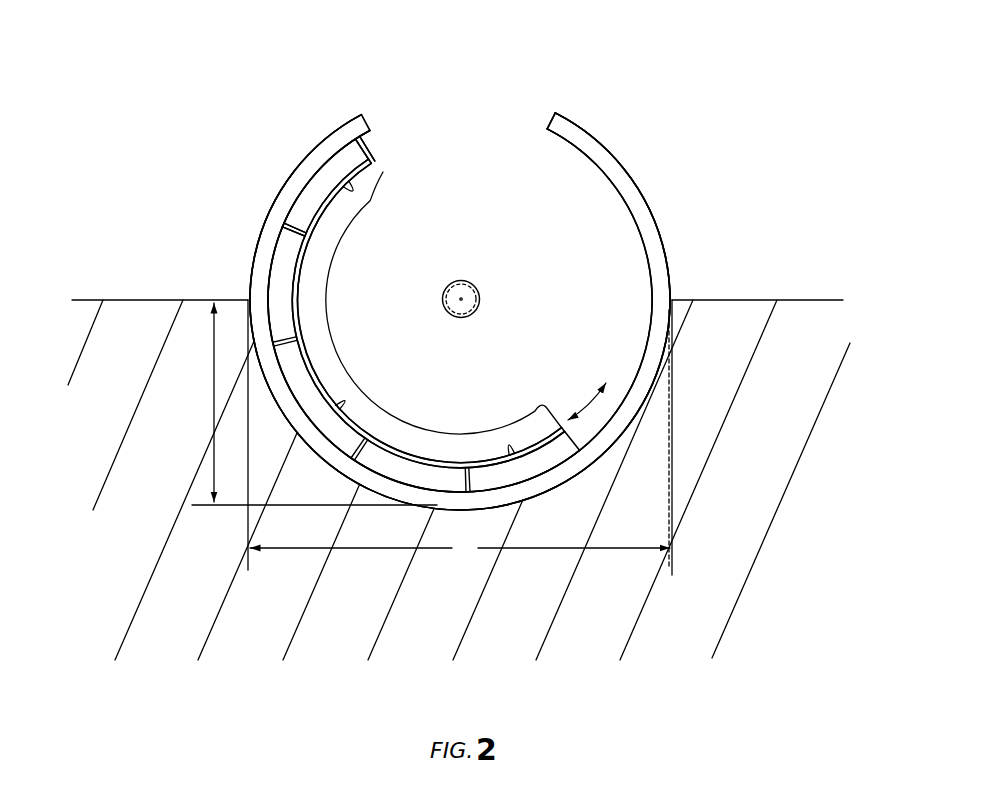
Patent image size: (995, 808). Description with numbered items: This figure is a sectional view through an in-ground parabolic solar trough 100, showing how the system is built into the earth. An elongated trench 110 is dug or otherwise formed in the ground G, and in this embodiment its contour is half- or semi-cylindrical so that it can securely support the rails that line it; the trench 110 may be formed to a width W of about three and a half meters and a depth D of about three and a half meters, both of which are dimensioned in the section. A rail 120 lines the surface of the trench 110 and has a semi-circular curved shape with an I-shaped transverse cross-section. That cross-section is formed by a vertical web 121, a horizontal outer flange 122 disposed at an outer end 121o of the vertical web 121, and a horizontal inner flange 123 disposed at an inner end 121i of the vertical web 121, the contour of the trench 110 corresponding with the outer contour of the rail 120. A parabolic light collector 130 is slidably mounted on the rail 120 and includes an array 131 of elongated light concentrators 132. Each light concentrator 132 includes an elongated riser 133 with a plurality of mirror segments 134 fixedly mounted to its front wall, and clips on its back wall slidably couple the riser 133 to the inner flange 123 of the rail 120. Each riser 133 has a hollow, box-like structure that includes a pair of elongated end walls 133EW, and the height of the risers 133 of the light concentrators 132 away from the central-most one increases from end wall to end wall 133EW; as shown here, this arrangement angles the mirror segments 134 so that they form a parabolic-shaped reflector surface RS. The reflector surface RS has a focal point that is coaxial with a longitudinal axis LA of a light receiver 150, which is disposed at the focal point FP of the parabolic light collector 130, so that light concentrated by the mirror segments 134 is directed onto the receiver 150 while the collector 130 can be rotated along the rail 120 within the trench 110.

The in-ground parabolic solar trough 100 is at (417, 55).
The trench 110 is at (667, 322).
The rail 120 is at (622, 165).
The vertical web 121 is at (568, 122).
The outer end of vertical web 121o is at (650, 198).
The inner end of vertical web 121i is at (646, 238).
The horizontal outer flange 122 is at (603, 141).
The horizontal inner flange 123 is at (603, 172).
The parabolic light collector 130 is at (383, 172).
The array 131 is at (366, 405).
The light concentrator 132 is at (313, 365).
The riser 133 is at (280, 243).
The end wall of riser 133EW is at (246, 228).
The mirror segment 134 is at (352, 178).
The light receiver 150 is at (466, 281).
The focal point FP is at (479, 291).
The longitudinal axis LA is at (459, 295).
The reflector surface RS is at (388, 446).
The ground G is at (782, 300).
The depth D is at (314, 404).
The width W is at (460, 548).